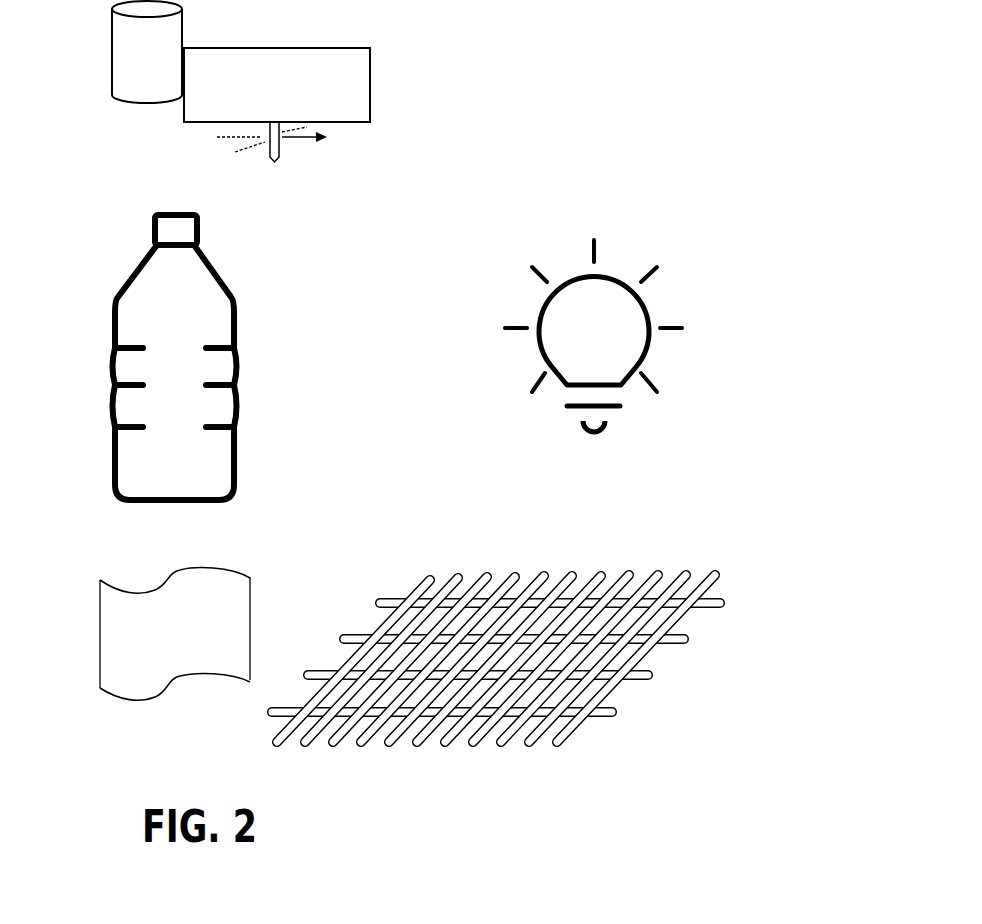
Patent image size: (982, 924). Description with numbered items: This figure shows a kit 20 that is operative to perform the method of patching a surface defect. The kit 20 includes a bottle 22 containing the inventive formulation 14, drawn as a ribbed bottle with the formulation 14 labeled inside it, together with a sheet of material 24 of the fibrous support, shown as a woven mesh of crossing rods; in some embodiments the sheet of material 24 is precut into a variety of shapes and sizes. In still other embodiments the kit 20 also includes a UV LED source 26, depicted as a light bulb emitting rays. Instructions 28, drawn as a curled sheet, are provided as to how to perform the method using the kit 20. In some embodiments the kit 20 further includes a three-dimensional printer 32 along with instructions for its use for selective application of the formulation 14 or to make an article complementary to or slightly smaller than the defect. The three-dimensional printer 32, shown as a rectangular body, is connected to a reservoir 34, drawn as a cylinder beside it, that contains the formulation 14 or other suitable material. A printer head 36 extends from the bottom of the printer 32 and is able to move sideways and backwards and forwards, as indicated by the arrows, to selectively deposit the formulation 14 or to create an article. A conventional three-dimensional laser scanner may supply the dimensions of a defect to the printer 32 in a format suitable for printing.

The formulation 14 is at (158, 387).
The kit 20 is at (738, 104).
The bottle 22 is at (200, 230).
The sheet of material 24 is at (632, 567).
The UV LED source 26 is at (645, 305).
The instructions 28 is at (173, 607).
The 3D printer 32 is at (370, 83).
The reservoir 34 is at (112, 32).
The printer head 36 is at (265, 149).